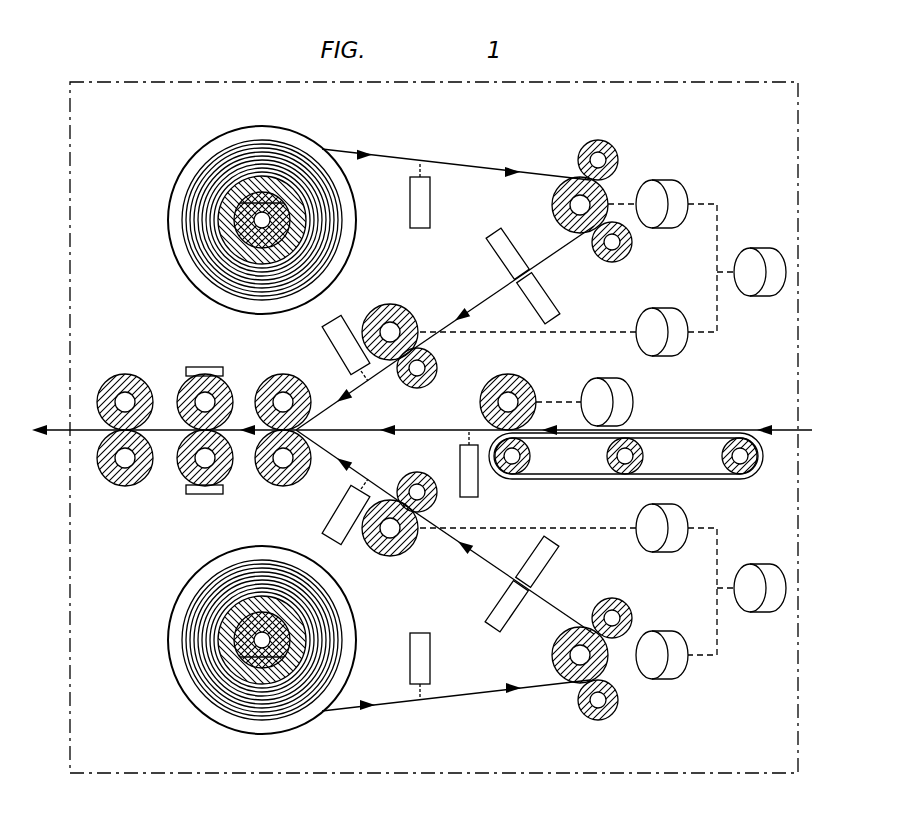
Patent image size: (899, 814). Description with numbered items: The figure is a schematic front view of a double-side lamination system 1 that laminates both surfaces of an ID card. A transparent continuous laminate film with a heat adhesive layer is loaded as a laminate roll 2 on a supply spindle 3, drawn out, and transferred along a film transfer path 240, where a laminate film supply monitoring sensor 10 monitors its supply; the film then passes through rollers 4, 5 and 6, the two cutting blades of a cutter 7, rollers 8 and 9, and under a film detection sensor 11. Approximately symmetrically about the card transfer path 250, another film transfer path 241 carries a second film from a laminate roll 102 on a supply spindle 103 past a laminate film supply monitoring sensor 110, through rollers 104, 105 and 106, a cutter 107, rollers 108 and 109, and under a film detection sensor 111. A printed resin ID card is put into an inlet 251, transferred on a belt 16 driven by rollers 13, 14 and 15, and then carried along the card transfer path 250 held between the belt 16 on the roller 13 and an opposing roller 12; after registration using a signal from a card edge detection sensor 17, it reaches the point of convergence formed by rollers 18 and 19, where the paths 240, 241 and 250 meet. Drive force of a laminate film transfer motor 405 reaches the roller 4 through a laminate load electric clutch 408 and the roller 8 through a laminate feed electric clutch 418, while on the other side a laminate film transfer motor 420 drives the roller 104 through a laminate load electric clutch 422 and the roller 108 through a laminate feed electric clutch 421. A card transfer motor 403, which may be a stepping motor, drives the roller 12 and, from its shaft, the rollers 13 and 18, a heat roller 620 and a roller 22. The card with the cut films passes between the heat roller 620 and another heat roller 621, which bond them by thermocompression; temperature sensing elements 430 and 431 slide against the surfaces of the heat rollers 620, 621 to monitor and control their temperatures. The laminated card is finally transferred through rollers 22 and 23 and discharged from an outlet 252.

The double-side lamination system 1 is at (760, 82).
The laminate roll 2 is at (246, 157).
The supply spindle 3 is at (189, 161).
The roller 4 is at (553, 205).
The roller 5 is at (612, 148).
The roller 6 is at (631, 250).
The cutter 7 is at (553, 286).
The roller 8 is at (386, 312).
The roller 9 is at (432, 364).
The laminate film supply monitoring sensor 10 is at (410, 198).
The film detection sensor 11 is at (347, 325).
The roller 12 is at (527, 383).
The roller 13 is at (514, 477).
The roller 14 is at (624, 472).
The roller 15 is at (752, 470).
The belt 16 is at (572, 480).
The card edge detection sensor 17 is at (460, 458).
The roller 18 is at (283, 385).
The roller 19 is at (283, 482).
The roller 22 is at (120, 380).
The roller 23 is at (120, 484).
The laminate roll 102 is at (246, 700).
The supply spindle 103 is at (190, 685).
The roller 104 is at (553, 658).
The roller 105 is at (615, 712).
The roller 106 is at (630, 610).
The cutter 107 is at (553, 575).
The roller 108 is at (393, 560).
The roller 109 is at (403, 478).
The laminate film supply monitoring sensor 110 is at (426, 634).
The film detection sensor 111 is at (357, 540).
The film transfer path 240 is at (416, 161).
The film transfer path 241 is at (398, 705).
The card transfer path 250 is at (468, 428).
The inlet 251 is at (790, 428).
The outlet 252 is at (68, 428).
The card transfer motor 403 is at (637, 400).
The laminate film transfer motor 405 is at (762, 250).
The laminate load electric clutch 408 is at (680, 188).
The laminate feed electric clutch 418 is at (682, 345).
The laminate film transfer motor 420 is at (763, 612).
The laminate feed electric clutch 421 is at (680, 518).
The laminate load electric clutch 422 is at (682, 676).
The temperature sensing element 430 is at (203, 368).
The temperature sensing element 431 is at (196, 494).
The heat roller 620 is at (228, 385).
The heat roller 621 is at (222, 479).